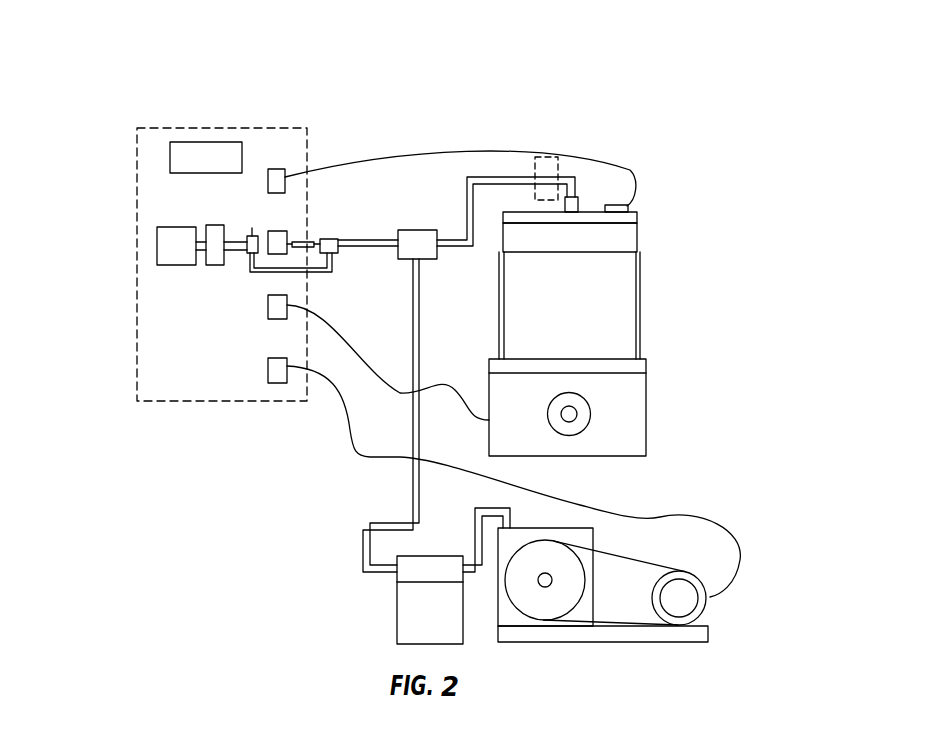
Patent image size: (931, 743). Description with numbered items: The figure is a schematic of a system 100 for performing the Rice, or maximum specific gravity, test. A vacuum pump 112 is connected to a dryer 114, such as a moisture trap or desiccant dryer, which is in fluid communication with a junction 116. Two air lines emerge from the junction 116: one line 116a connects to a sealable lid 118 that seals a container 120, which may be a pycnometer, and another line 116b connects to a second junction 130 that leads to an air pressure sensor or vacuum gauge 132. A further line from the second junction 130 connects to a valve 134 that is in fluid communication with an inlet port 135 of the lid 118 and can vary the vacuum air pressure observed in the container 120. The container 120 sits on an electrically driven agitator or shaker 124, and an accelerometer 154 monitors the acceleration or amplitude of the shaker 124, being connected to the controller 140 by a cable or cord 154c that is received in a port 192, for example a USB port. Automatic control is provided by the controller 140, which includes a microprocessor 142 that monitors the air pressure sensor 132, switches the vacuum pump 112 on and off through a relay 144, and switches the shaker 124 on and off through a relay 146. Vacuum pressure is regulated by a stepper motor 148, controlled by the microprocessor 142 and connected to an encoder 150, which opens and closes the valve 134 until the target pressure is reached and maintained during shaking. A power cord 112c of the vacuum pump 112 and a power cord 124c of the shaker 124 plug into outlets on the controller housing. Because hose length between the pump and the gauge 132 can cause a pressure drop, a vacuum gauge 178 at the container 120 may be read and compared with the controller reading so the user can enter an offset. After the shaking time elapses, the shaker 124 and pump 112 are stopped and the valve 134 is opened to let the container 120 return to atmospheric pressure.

The system 100 is at (163, 51).
The vacuum pump 112 is at (557, 528).
The power cord 112c is at (353, 453).
The dryer 114 is at (397, 598).
The junction 116 is at (437, 259).
The air line 116a is at (493, 177).
The air line 116b is at (372, 240).
The sealable lid 118 is at (637, 213).
The container 120 is at (637, 240).
The shaker 124 is at (646, 410).
The power cord 124c is at (393, 390).
The second junction 130 is at (329, 254).
The air pressure sensor 132 is at (277, 231).
The valve 134 is at (250, 256).
The inlet port 135 is at (578, 205).
The controller 140 is at (227, 128).
The microprocessor 142 is at (236, 142).
The relay 144 is at (268, 368).
The relay 146 is at (268, 312).
The stepper motor 148 is at (157, 227).
The encoder 150 is at (207, 225).
The accelerometer 154 is at (628, 205).
The cable 154c is at (613, 157).
The vacuum gauge 178 is at (572, 165).
The port 192 is at (277, 169).